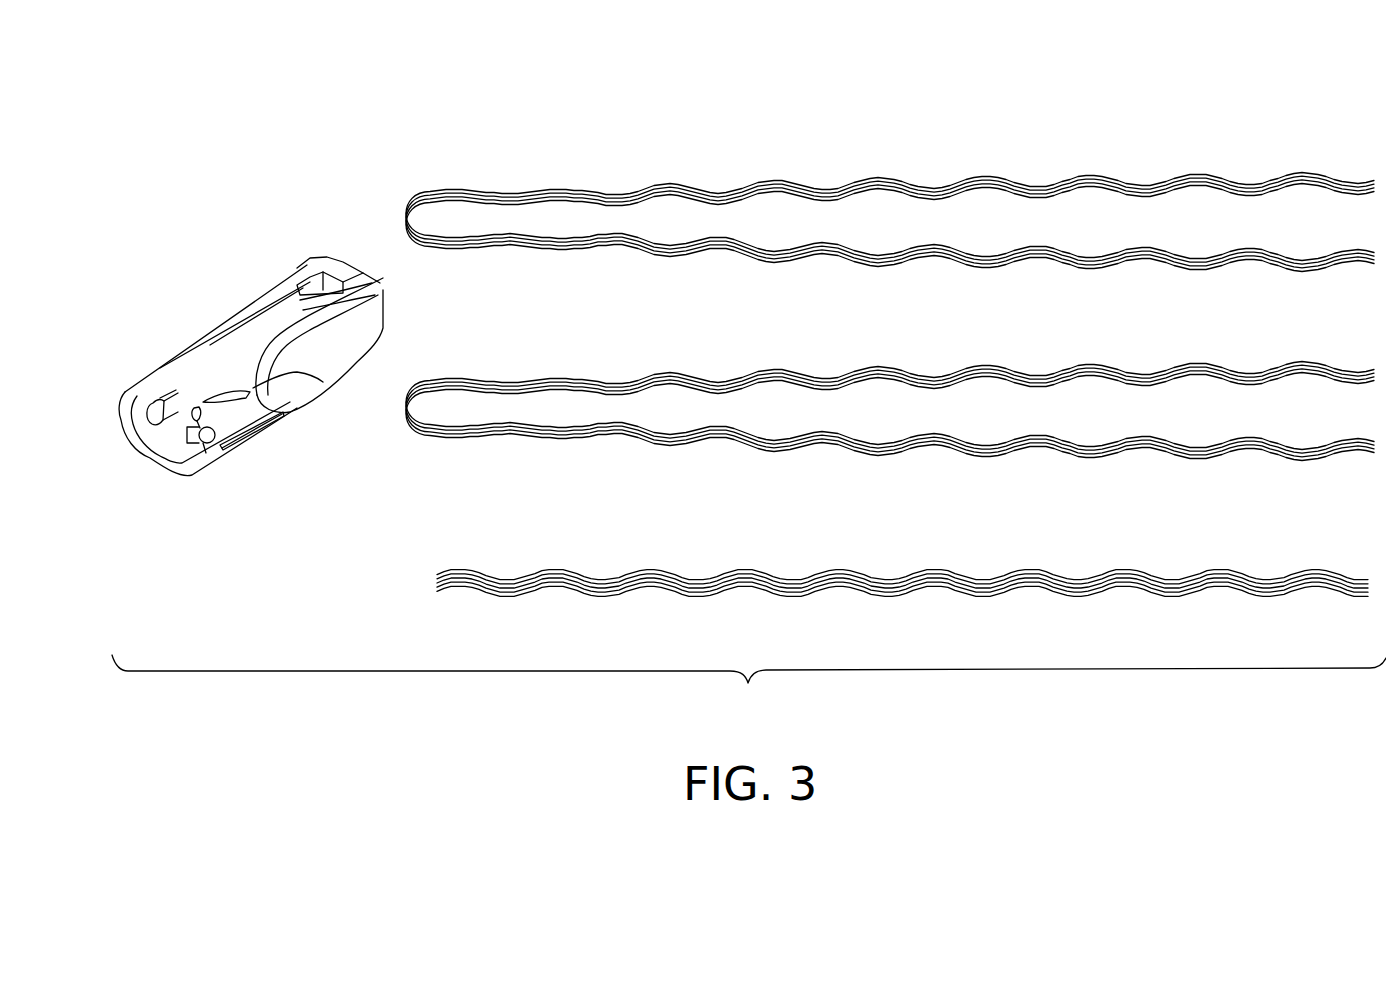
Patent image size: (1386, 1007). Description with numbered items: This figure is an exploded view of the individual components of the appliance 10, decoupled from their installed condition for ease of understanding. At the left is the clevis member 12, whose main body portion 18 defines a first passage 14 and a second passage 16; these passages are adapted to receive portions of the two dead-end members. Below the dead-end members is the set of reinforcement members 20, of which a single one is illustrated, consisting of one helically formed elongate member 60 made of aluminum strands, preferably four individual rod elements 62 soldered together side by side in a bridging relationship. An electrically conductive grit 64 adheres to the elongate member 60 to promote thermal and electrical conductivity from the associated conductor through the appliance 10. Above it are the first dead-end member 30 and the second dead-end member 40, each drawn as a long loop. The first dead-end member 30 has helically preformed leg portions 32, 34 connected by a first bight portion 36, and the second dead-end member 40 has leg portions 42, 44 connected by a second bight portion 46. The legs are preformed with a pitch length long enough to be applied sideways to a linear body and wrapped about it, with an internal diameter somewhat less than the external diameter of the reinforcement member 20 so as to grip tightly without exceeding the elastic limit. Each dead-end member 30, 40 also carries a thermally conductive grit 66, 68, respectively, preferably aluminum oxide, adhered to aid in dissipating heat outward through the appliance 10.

The appliance 10 is at (749, 685).
The clevis member 12 is at (251, 343).
The first passage 14 is at (292, 360).
The second passage 16 is at (192, 366).
The main body portion 18 is at (245, 420).
The set of reinforcement members 20 is at (871, 582).
The first dead-end member 30 is at (864, 413).
The leg portion of first dead-end member 32 is at (864, 413).
The leg portion of first dead-end member 34 is at (895, 455).
The first bight portion 36 is at (864, 413).
The second dead-end member 40 is at (864, 222).
The leg portion of second dead-end member 42 is at (864, 222).
The leg portion of second dead-end member 44 is at (1010, 265).
The second bight portion 46 is at (864, 222).
The helically formed elongate member 60 is at (1018, 592).
The rod elements 62 is at (871, 591).
The electrically conductive grit 64 is at (902, 610).
The thermally conductive grit 66 is at (890, 222).
The thermally conductive grit 68 is at (890, 413).